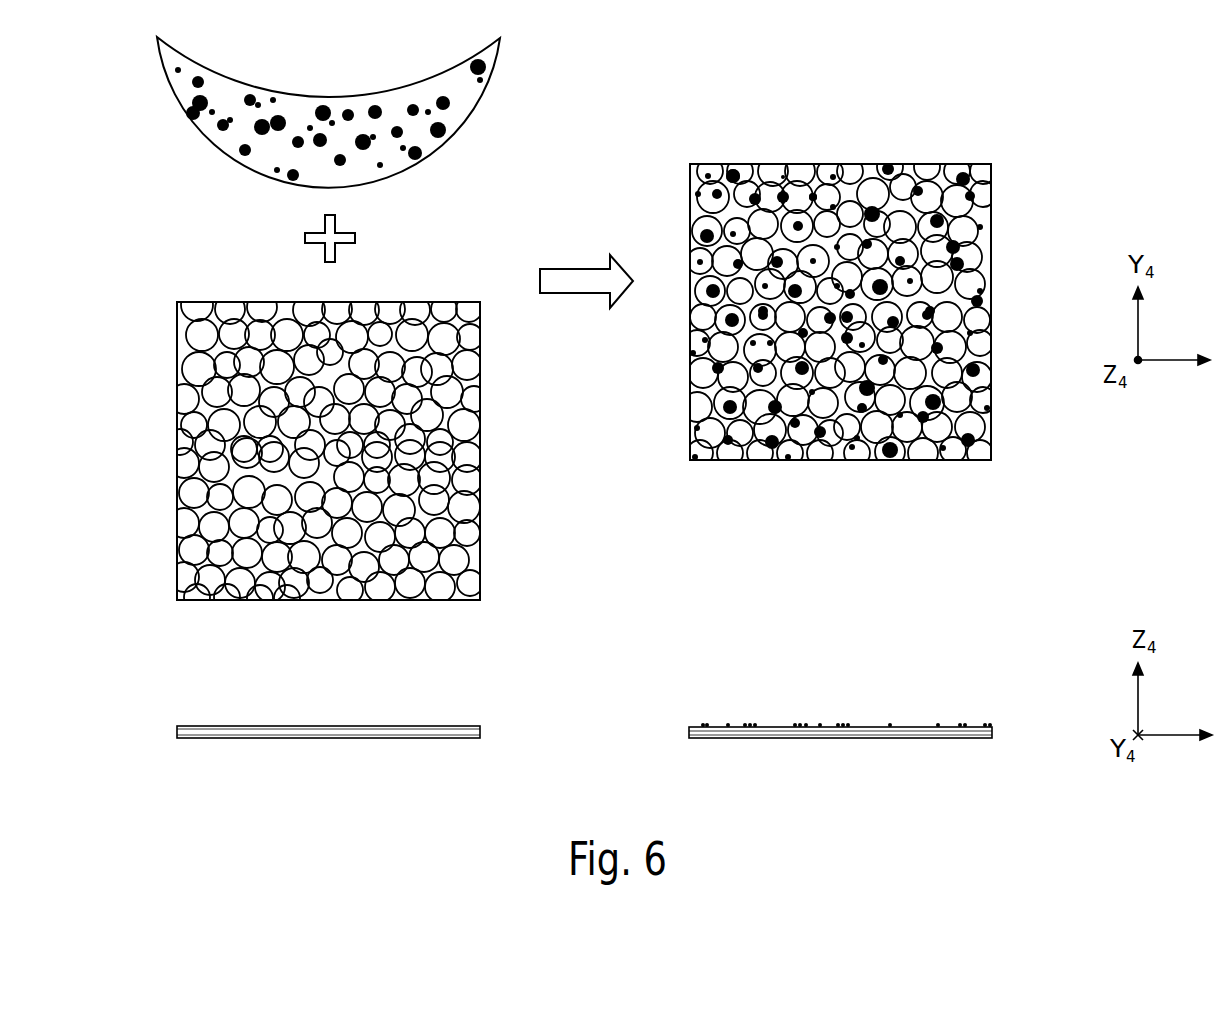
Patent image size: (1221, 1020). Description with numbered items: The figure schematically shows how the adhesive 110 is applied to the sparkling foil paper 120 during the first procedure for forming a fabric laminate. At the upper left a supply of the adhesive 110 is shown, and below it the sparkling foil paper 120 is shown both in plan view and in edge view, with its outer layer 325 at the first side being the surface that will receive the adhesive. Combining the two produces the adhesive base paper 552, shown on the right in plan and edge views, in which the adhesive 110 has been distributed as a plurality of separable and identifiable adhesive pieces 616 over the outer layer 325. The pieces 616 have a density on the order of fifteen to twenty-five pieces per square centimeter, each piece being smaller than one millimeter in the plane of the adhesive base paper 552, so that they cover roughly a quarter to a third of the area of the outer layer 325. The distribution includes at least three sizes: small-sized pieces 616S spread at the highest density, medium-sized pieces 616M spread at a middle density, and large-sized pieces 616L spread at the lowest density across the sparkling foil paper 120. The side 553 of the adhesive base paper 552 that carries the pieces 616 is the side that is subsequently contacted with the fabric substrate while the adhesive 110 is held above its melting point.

The adhesive 110 is at (328, 110).
The sparkling foil paper 120 is at (177, 384).
The outer layer 325 is at (242, 525).
The adhesive base paper 552 is at (667, 364).
The side 553 is at (855, 203).
The adhesive pieces 616 is at (963, 292).
The large-sized pieces 616L is at (736, 172).
The small-sized pieces 616S is at (784, 175).
The medium-sized pieces 616M is at (813, 193).